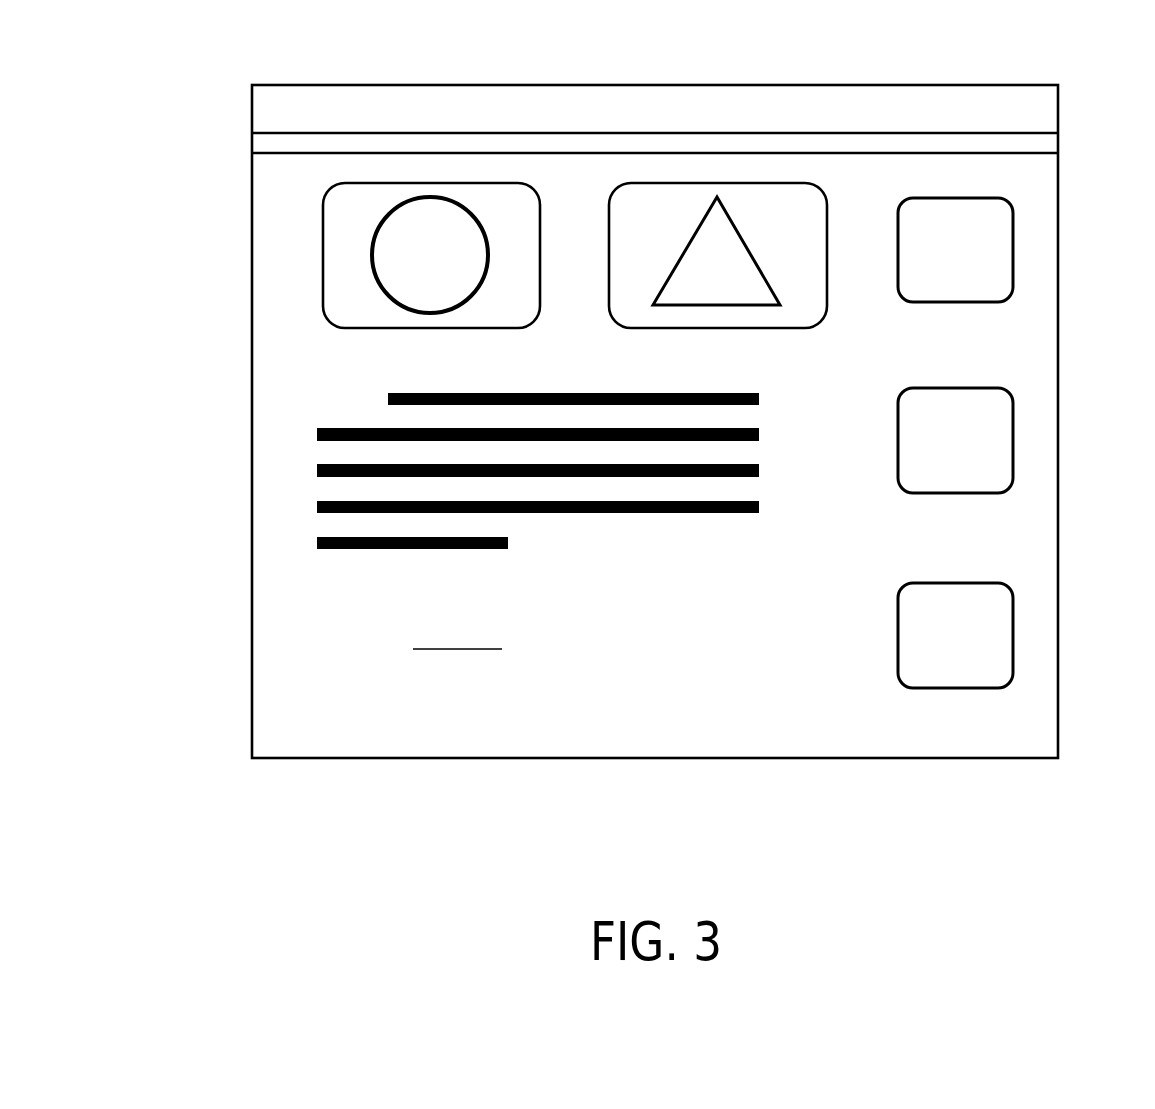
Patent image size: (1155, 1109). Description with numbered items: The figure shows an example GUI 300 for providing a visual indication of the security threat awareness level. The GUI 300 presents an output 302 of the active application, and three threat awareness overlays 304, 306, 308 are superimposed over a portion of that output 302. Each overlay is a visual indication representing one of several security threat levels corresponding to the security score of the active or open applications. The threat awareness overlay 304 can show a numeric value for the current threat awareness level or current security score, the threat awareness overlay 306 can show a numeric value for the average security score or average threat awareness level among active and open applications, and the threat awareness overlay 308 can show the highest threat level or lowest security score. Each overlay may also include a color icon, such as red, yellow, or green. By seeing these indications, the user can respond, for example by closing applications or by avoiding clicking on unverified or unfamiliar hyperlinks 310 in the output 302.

The GUI 300 is at (1012, 82).
The output 302 is at (215, 188).
The threat awareness overlay 304 is at (940, 302).
The threat awareness overlay 306 is at (940, 493).
The threat awareness overlay 308 is at (940, 688).
The hyperlinks 310 is at (410, 610).